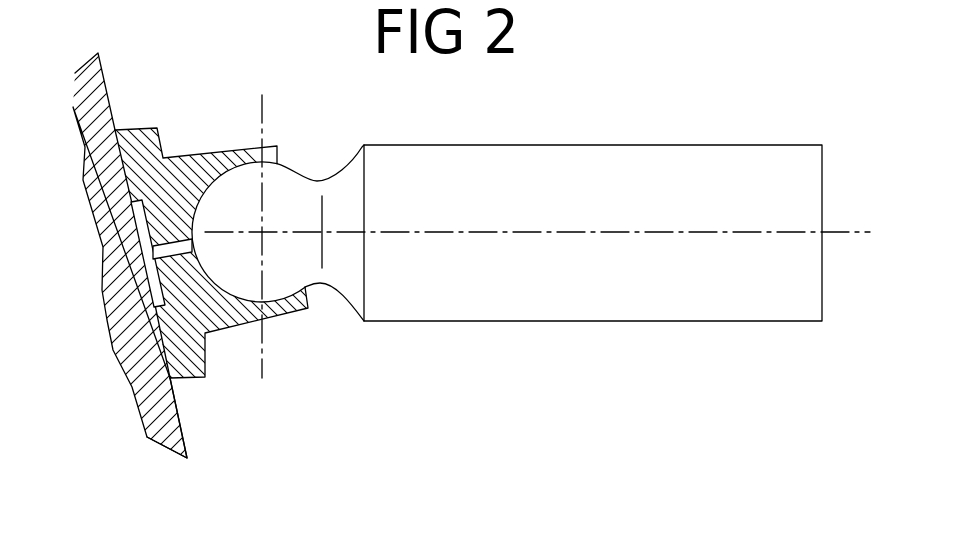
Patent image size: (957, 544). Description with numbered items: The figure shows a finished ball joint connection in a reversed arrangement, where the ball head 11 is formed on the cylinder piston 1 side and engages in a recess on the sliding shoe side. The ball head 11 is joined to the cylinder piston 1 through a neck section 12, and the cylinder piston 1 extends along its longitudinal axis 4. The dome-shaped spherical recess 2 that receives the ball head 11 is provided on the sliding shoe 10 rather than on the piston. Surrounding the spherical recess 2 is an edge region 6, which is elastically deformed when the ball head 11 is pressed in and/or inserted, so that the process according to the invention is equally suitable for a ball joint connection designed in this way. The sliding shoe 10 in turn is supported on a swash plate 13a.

The cylinder piston 1 is at (688, 160).
The dome-shaped spherical recess 2 is at (221, 285).
The longitudinal axis 4 is at (861, 237).
The edge region 6 is at (298, 317).
The sliding shoe 10 is at (140, 128).
The ball head 11 is at (237, 196).
The neck section 12 is at (342, 263).
The swash plate 13a is at (157, 417).